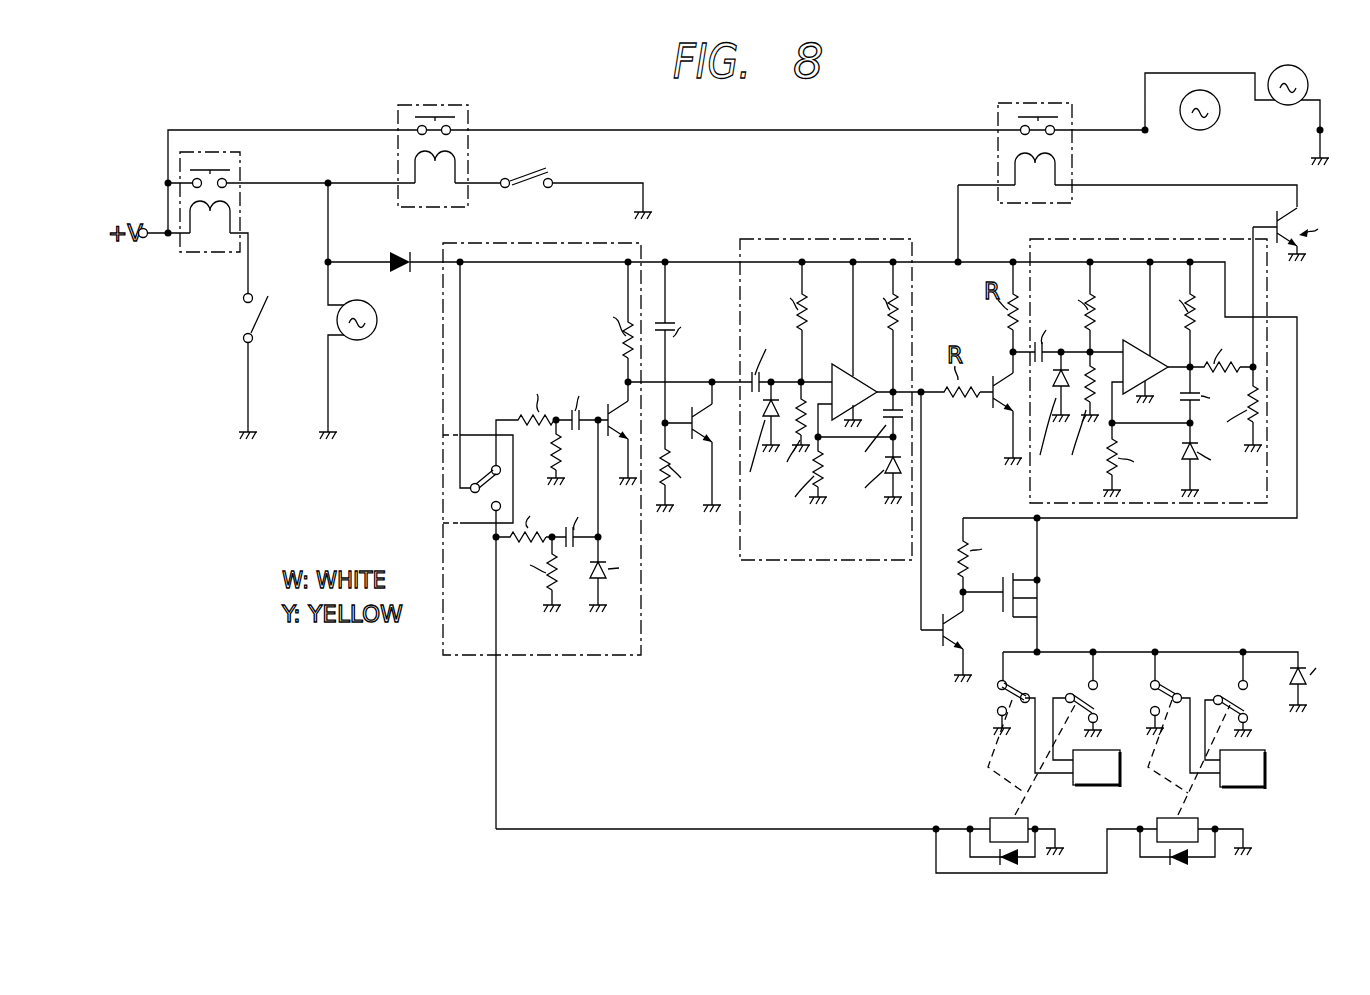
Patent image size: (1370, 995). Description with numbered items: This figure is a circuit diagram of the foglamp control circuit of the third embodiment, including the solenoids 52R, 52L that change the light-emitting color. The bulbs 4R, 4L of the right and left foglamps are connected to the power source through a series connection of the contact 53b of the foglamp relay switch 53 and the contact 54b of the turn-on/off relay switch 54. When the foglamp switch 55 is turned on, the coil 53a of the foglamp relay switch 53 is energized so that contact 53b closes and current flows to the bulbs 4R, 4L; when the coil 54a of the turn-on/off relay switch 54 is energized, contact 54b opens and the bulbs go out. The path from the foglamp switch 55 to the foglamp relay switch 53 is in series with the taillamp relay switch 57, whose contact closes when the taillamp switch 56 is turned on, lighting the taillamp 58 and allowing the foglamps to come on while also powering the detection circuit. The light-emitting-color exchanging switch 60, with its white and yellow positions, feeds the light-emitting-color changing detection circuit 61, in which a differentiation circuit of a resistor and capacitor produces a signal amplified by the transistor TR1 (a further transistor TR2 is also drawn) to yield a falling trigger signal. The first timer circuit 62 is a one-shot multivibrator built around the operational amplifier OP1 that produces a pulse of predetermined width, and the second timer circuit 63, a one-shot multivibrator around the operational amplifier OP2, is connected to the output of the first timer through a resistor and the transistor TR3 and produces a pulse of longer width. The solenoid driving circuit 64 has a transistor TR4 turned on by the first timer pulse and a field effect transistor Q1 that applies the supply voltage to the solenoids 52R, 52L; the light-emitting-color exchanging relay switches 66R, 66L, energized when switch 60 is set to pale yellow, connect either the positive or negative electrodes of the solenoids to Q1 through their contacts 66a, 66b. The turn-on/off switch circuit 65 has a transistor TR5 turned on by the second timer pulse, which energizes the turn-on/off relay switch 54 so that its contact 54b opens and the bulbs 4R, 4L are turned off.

The bulb of left foglamp 4L is at (1218, 110).
The bulb of right foglamp 4R is at (1309, 85).
The right solenoid 52R is at (1090, 787).
The left solenoid 52L is at (1250, 787).
The foglamp relay switch 53 is at (394, 137).
The coil of foglamp relay switch 53a is at (401, 171).
The contact of foglamp relay switch 53b is at (401, 122).
The turn-on/off relay switch 54 is at (1119, 169).
The coil of turn-on/off relay switch 54a is at (1060, 161).
The contact of turn-on/off relay switch 54b is at (1048, 113).
The foglamp switch 55 is at (528, 166).
The taillamp switch 56 is at (240, 316).
The taillamp relay switch 57 is at (192, 254).
The taillamp 58 is at (358, 341).
The light-emitting-color exchanging switch 60 is at (441, 510).
The light-emitting-color changing detection circuit 61 is at (565, 536).
The first timer circuit 62 is at (824, 430).
The second timer circuit 63 is at (1148, 399).
The solenoid driving circuit 64 is at (914, 694).
The turn-on/off switch circuit 65 is at (1328, 239).
The contact of light-emitting-color exchanging relay switch 66a is at (983, 695).
The contact of light-emitting-color exchanging relay switch 66b is at (1100, 702).
The right light-emitting-color exchanging relay switch 66R is at (988, 820).
The left light-emitting-color exchanging relay switch 66L is at (1200, 823).
The transistor TR1 is at (610, 402).
The transistor TR2 is at (690, 405).
The transistor TR3 is at (987, 412).
The transistor TR4 is at (935, 638).
The transistor TR5 is at (1273, 218).
The operational amplifier OP1 is at (831, 373).
The operational amplifier OP2 is at (1123, 343).
The field effect transistor Q1 is at (1047, 603).